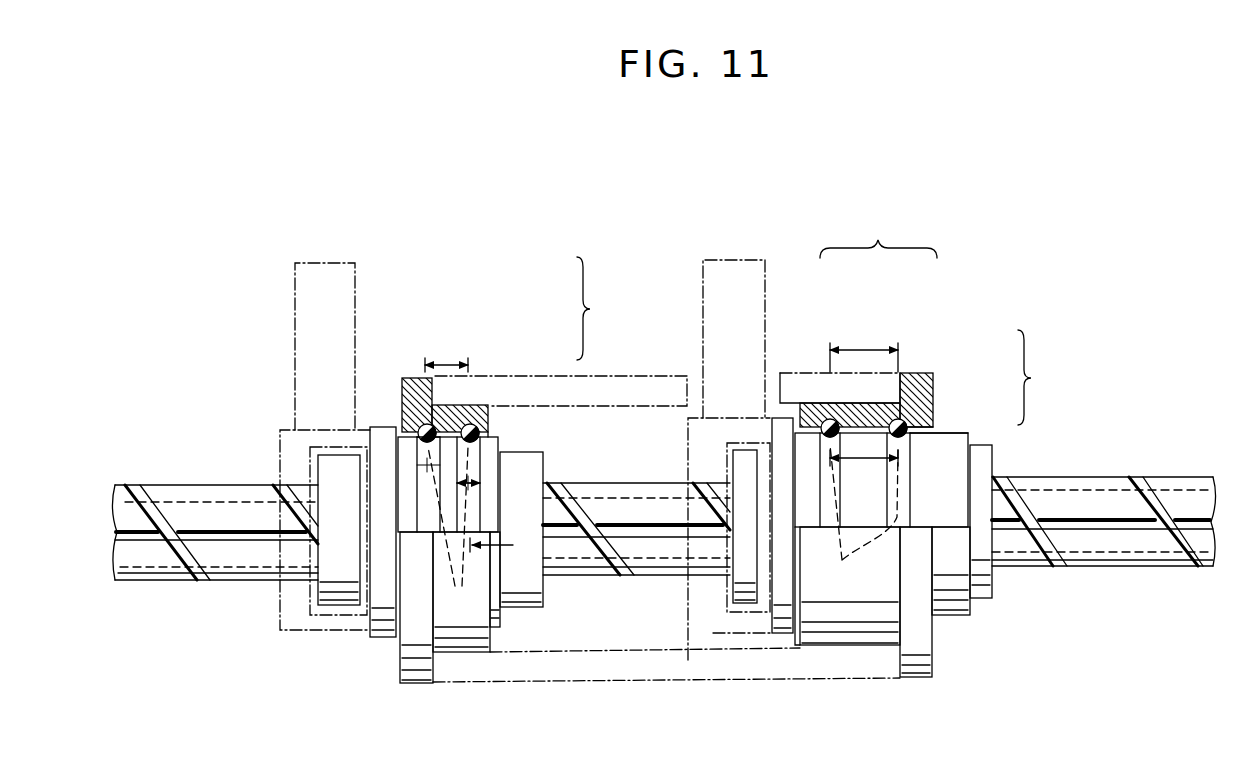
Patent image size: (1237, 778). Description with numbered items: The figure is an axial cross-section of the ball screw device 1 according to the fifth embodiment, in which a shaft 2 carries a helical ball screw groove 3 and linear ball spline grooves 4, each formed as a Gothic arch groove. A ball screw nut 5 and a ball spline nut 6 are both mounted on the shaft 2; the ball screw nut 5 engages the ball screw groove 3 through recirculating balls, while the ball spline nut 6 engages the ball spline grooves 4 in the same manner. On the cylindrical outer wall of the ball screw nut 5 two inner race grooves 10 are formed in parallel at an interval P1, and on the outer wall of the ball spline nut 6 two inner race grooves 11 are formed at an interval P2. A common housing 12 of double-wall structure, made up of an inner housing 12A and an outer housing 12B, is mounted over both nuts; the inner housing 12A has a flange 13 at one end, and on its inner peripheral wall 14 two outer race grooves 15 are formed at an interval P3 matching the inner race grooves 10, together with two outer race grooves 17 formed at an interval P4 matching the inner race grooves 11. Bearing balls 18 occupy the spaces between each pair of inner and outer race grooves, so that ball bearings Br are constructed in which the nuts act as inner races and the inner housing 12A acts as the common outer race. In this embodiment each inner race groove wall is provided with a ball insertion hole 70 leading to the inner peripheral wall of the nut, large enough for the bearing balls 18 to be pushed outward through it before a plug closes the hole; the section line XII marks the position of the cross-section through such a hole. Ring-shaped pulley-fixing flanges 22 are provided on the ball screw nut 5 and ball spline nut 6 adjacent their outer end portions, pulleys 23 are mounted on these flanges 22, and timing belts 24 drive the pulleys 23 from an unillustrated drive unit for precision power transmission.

The ball screw device 1 is at (1025, 259).
The shaft 2 is at (1083, 557).
The helical ball screw groove 3 is at (198, 579).
The ball spline grooves 4 is at (120, 538).
The ball screw nut 5 is at (408, 458).
The ball spline nut 6 is at (957, 583).
The inner race grooves 10 is at (498, 447).
The inner race grooves 11 is at (914, 462).
The common housing 12 is at (878, 233).
The inner housing 12A is at (455, 425).
The outer housing 12B is at (806, 384).
The flange 13 is at (414, 378).
The inner peripheral wall 14 is at (403, 450).
The outer race grooves 15 is at (450, 420).
The outer race grooves 17 is at (920, 398).
The bearing balls 18 is at (477, 425).
The pulley-fixing flanges 22 is at (376, 635).
The pulleys 23 is at (296, 618).
The timing belts 24 is at (345, 290).
The ball insertion hole 70 is at (664, 548).
The ball bearings Br is at (824, 341).
The interval of inner race grooves P1 is at (480, 484).
The interval of inner race grooves P2 is at (864, 475).
The interval of outer race grooves P3 is at (446, 353).
The interval of outer race grooves P4 is at (864, 346).
The section line XII is at (502, 535).